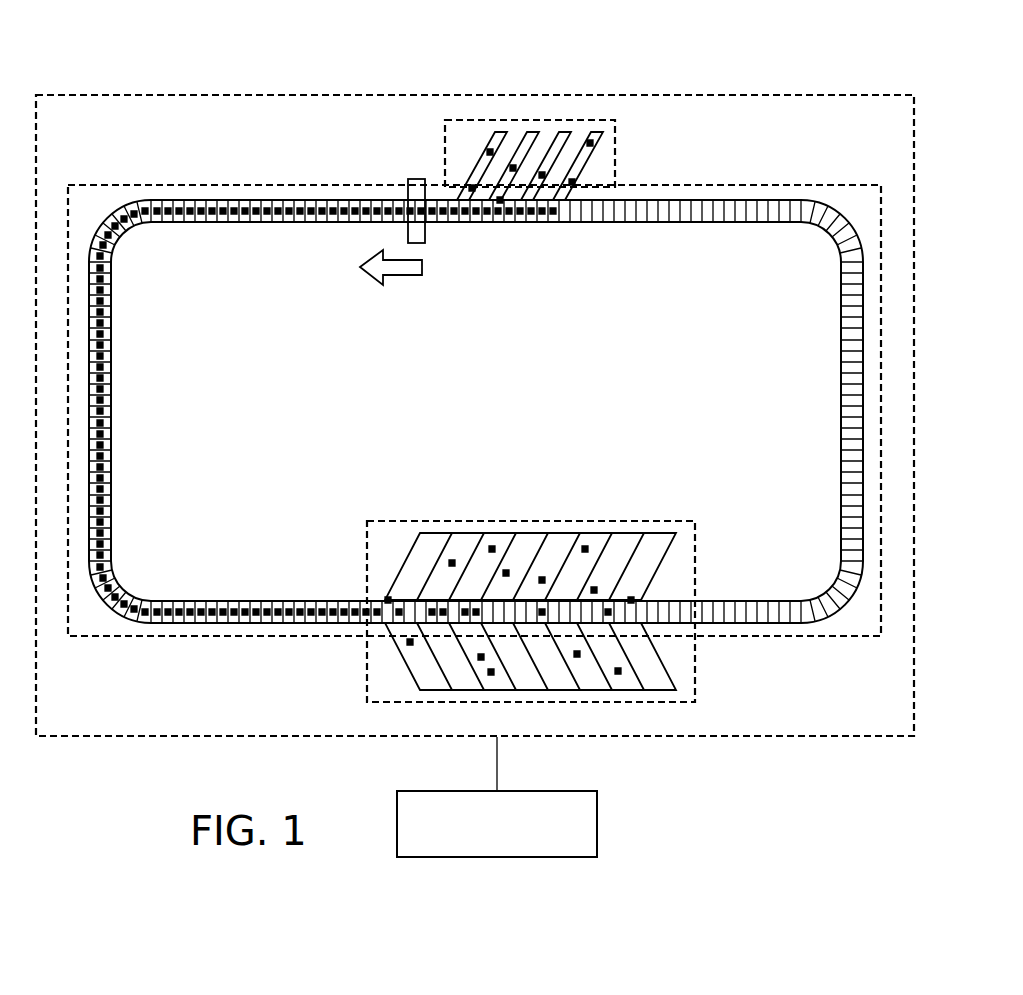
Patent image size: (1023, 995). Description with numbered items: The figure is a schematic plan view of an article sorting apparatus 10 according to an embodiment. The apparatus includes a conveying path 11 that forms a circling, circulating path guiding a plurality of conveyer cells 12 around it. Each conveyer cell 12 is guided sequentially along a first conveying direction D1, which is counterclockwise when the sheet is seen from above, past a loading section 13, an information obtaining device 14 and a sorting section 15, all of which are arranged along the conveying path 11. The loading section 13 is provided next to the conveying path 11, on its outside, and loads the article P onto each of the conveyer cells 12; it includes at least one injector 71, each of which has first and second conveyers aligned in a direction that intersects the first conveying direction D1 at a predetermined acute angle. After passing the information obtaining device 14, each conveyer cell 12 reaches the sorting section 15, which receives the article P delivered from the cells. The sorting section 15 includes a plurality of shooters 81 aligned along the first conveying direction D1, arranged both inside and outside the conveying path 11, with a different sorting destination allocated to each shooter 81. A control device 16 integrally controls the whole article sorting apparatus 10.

The article sorting apparatus 10 is at (943, 95).
The conveying path 11 is at (804, 188).
The conveyer cell 12 is at (500, 216).
The article P is at (490, 212).
The loading section 13 is at (615, 133).
The information obtaining device 14 is at (415, 179).
The sorting section 15 is at (697, 522).
The control device 16 is at (598, 827).
The injector 71 is at (597, 131).
The shooter 81 is at (525, 533).
The first conveying direction D1 is at (391, 280).